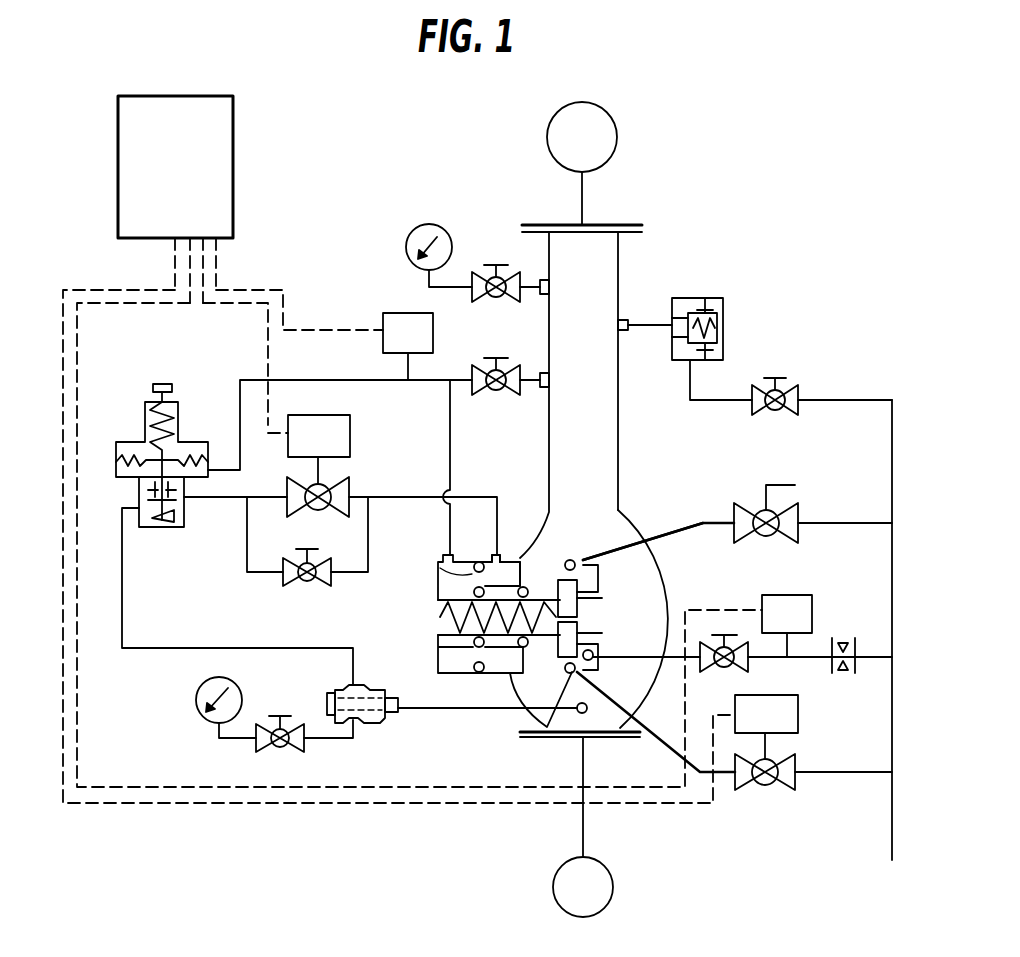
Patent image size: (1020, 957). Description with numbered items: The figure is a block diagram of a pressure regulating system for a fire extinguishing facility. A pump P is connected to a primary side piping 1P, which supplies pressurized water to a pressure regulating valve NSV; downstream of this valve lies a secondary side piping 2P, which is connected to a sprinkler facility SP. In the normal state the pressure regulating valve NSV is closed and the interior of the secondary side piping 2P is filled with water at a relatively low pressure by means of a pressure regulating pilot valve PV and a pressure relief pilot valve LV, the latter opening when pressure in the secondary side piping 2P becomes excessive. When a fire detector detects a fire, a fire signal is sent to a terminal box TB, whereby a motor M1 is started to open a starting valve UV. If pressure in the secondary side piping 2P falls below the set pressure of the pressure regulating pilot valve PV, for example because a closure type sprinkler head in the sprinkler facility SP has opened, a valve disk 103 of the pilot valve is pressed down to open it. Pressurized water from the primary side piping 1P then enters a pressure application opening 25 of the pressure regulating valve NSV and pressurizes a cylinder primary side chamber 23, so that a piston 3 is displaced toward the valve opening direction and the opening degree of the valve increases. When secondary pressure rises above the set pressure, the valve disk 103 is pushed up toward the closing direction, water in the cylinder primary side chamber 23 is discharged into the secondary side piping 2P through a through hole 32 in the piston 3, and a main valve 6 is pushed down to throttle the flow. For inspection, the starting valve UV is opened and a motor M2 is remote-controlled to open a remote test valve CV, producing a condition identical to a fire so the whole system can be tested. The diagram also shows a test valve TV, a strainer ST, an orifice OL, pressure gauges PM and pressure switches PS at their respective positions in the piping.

The terminal box TB is at (165, 96).
The sprinkler facility SP is at (582, 163).
The pressure gauge PM is at (420, 226).
The secondary side piping 2P is at (618, 277).
The pressure relief pilot valve LV is at (726, 312).
The pressure switch PS is at (597, 485).
The pressure regulating pilot valve PV is at (158, 376).
The motor M1 is at (319, 449).
The starting valve UV is at (351, 489).
The test valve TV is at (767, 484).
The valve disk 103 is at (166, 527).
The pressure application opening 25 is at (500, 556).
The cylinder primary side chamber 23 is at (521, 566).
The through hole 32 is at (470, 572).
The piston 3 is at (475, 583).
The main valve 6 is at (581, 625).
The orifice OL is at (843, 636).
The strainer ST is at (373, 686).
The pressure regulating valve NSV is at (528, 720).
The primary side piping 1P is at (584, 770).
The motor M2 is at (766, 727).
The remote test valve CV is at (765, 797).
The pump P is at (583, 887).